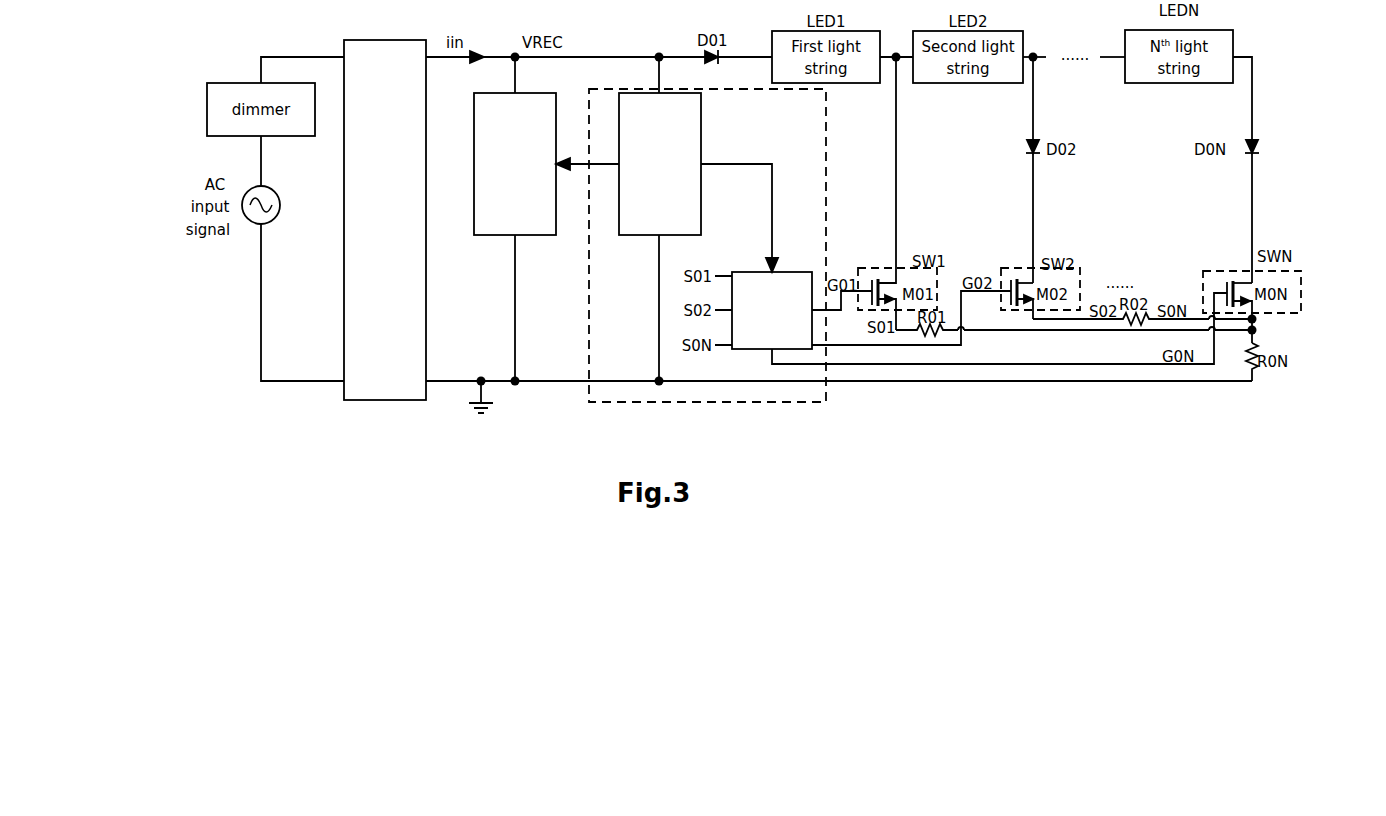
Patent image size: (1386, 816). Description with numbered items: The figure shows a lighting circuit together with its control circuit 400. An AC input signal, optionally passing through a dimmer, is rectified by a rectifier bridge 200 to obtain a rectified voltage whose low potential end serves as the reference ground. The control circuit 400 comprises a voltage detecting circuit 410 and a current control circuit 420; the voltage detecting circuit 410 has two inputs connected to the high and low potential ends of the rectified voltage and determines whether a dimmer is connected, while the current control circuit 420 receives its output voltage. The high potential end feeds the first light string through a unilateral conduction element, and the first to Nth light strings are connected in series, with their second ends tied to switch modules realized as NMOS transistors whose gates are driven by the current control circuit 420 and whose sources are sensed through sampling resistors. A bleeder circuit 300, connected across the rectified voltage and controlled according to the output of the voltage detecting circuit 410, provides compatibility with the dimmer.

The rectifier bridge 200 is at (385, 211).
The bleeder circuit 300 is at (516, 154).
The control circuit 400 is at (707, 260).
The voltage detecting circuit 410 is at (660, 175).
The current control circuit 420 is at (772, 300).